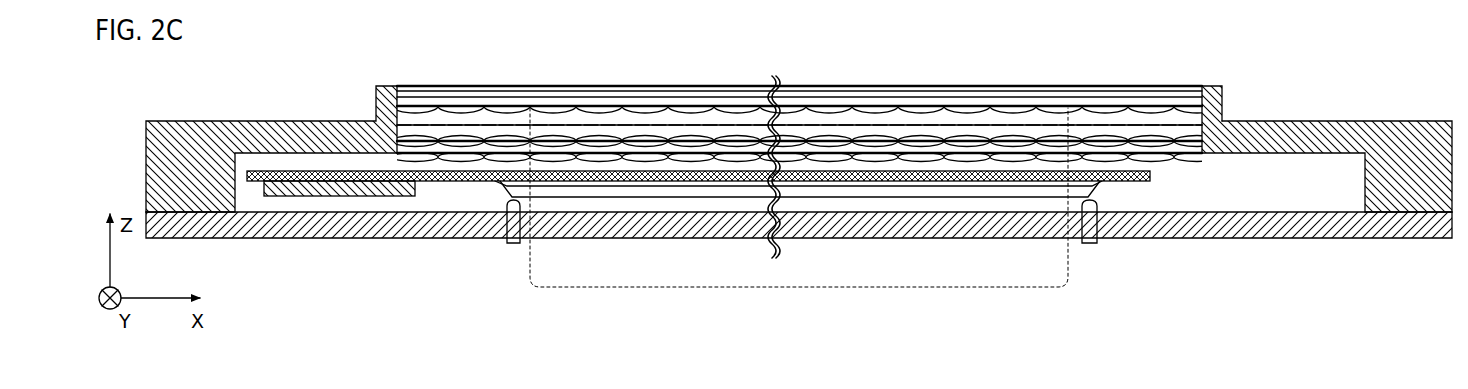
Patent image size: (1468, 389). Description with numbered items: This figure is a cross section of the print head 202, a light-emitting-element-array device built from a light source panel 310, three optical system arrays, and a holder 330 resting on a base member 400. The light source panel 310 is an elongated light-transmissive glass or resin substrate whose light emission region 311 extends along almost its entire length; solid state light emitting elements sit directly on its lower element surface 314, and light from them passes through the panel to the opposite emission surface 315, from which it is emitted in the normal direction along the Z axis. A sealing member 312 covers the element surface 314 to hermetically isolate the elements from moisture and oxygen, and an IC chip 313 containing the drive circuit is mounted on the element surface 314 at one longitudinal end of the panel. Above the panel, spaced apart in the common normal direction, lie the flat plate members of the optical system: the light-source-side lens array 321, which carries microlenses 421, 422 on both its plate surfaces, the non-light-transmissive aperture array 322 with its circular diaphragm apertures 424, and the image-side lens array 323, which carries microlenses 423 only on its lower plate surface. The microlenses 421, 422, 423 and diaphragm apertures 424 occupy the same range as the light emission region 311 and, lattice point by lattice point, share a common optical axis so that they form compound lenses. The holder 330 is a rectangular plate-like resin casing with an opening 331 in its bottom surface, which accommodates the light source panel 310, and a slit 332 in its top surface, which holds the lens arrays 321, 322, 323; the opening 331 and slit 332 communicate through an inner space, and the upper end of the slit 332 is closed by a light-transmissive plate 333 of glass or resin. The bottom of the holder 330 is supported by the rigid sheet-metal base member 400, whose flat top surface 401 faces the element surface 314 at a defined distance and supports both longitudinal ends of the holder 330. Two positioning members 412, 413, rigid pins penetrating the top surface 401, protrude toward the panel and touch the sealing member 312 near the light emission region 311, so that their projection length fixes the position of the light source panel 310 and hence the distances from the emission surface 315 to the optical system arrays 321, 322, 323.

The print head 202 is at (287, 96).
The light source panel 310 is at (446, 188).
The light emission region 311 is at (799, 214).
The sealing member 312 is at (1013, 199).
The IC chip 313 is at (340, 198).
The element surface 314 is at (908, 187).
The emission surface 315 is at (887, 175).
The light-source-side lens array 321 is at (1135, 141).
The aperture array 322 is at (1090, 126).
The image-side lens array 323 is at (1070, 87).
The holder 330 is at (1339, 110).
The opening 331 is at (1363, 187).
The slit 332 is at (1199, 111).
The light-transmissive plate 333 is at (1033, 86).
The base member 400 is at (1352, 243).
The top surface 401 is at (1183, 204).
The positioning member 412 is at (509, 224).
The positioning member 413 is at (1092, 224).
The microlens 421 is at (592, 162).
The microlens 422 is at (598, 137).
The microlens 423 is at (608, 112).
The diaphragm aperture 424 is at (623, 122).